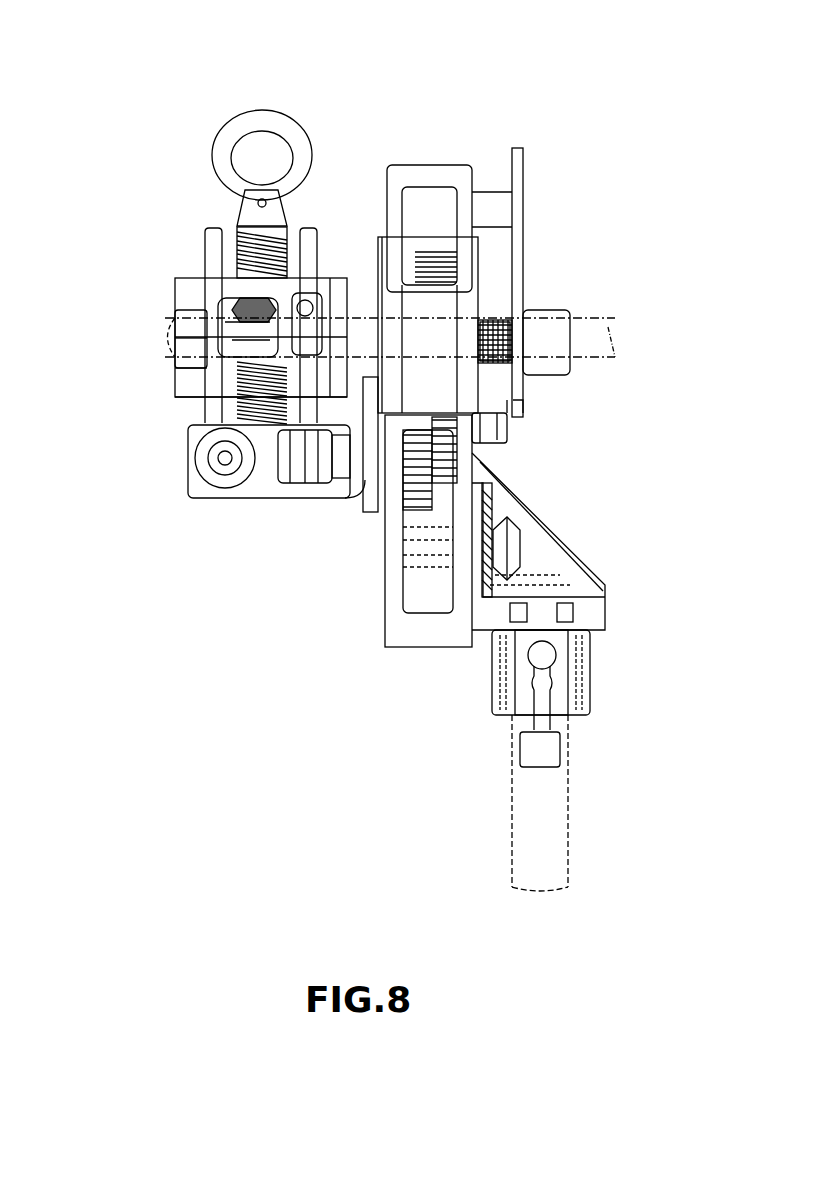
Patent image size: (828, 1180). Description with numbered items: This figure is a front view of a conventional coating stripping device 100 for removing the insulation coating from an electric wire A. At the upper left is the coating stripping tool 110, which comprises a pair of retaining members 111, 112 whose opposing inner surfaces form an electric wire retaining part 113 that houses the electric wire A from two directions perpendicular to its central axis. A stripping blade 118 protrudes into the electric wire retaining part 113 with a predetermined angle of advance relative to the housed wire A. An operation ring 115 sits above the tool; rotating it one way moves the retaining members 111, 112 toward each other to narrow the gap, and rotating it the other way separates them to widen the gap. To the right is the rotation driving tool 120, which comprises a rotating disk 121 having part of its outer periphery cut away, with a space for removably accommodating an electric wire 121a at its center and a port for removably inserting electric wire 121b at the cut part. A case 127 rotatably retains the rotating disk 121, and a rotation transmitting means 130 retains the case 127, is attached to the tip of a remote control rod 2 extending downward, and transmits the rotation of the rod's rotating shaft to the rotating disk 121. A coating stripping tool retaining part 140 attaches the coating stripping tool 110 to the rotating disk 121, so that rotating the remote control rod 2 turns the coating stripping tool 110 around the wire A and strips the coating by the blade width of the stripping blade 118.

The coating stripping device 100 is at (588, 106).
The coating stripping tool 110 is at (198, 248).
The retaining member 111 is at (177, 279).
The retaining member 112 is at (198, 380).
The electric wire retaining part 113 is at (168, 327).
The operation ring 115 is at (273, 120).
The stripping blade 118 is at (287, 267).
The rotation driving tool 120 is at (492, 278).
The rotating disk 121 is at (422, 157).
The space for removably accommodating an electric wire 121a is at (427, 340).
The port for removably inserting electric wire 121b is at (432, 346).
The case 127 is at (460, 183).
The rotation transmitting means 130 is at (378, 598).
The coating stripping tool retaining part 140 is at (270, 508).
The electric wire A is at (583, 330).
The remote control rod 2 is at (520, 817).